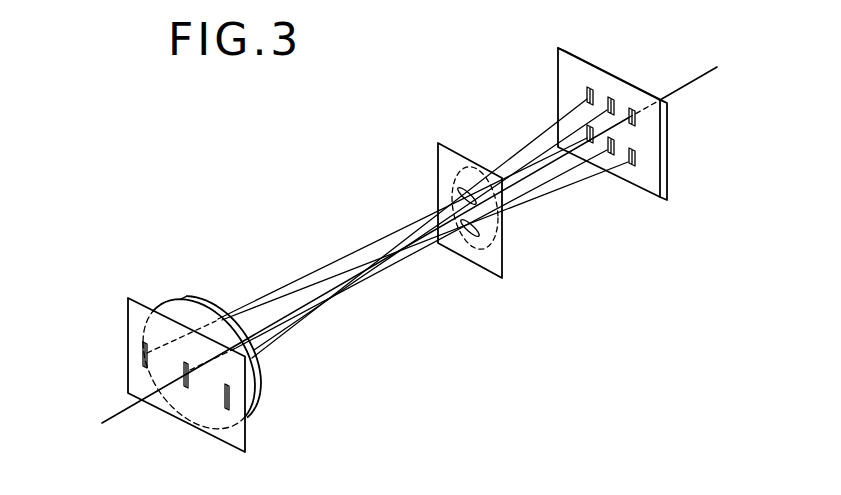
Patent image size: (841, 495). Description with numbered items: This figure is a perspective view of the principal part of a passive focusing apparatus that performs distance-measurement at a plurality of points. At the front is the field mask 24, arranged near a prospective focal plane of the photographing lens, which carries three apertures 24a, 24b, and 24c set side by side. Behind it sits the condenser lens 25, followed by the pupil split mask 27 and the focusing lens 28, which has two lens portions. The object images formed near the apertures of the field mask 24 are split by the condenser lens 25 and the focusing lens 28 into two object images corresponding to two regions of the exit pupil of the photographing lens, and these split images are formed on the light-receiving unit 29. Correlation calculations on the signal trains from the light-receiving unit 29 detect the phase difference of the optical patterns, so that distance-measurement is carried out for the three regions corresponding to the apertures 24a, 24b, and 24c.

The field mask 24 is at (133, 312).
The aperture 24a is at (143, 355).
The aperture 24b is at (185, 390).
The aperture 24c is at (230, 412).
The condenser lens 25 is at (194, 302).
The pupil split mask 27 is at (445, 160).
The focusing lens 28 is at (485, 166).
The light-receiving unit 29 is at (573, 66).